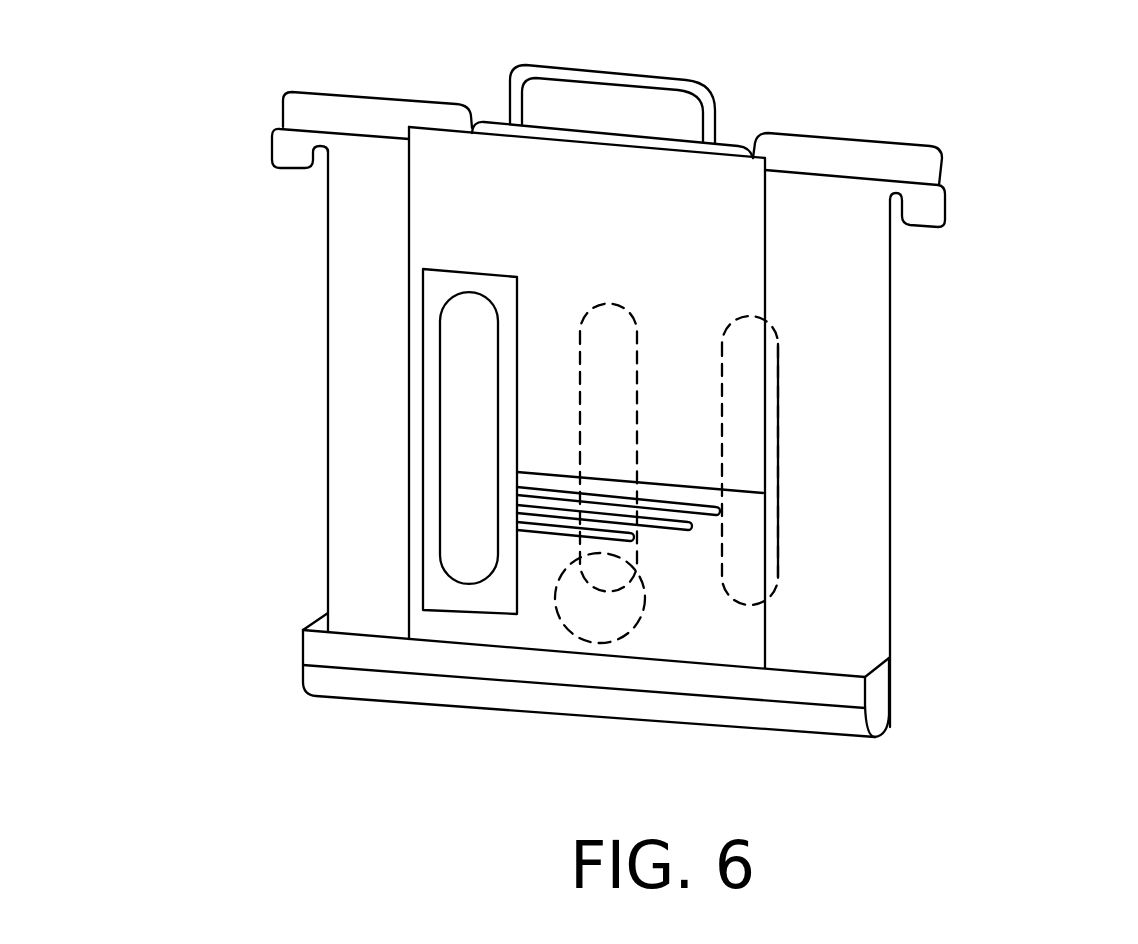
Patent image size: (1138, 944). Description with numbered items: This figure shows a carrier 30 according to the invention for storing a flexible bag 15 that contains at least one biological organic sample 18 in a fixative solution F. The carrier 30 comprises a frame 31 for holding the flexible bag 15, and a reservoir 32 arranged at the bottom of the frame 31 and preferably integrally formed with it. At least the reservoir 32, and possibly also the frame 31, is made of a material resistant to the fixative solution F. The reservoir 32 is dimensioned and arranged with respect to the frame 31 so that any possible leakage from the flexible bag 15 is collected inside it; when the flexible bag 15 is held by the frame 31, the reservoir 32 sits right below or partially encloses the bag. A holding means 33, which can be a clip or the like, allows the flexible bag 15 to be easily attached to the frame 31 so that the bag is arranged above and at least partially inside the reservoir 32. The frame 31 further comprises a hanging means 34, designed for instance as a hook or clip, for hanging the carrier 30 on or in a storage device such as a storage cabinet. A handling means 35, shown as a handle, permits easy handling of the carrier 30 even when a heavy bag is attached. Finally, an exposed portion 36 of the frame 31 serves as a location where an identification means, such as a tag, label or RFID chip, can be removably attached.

The carrier 30 is at (1033, 204).
The frame 31 is at (870, 378).
The reservoir 32 is at (878, 704).
The holding means 33 is at (733, 143).
The hanging means 34 is at (302, 172).
The handling means 35 is at (600, 76).
The exposed portion 36 is at (892, 152).
The flexible bag 15 is at (408, 258).
The biological organic sample 18 is at (567, 637).
The fixative solution F is at (767, 624).